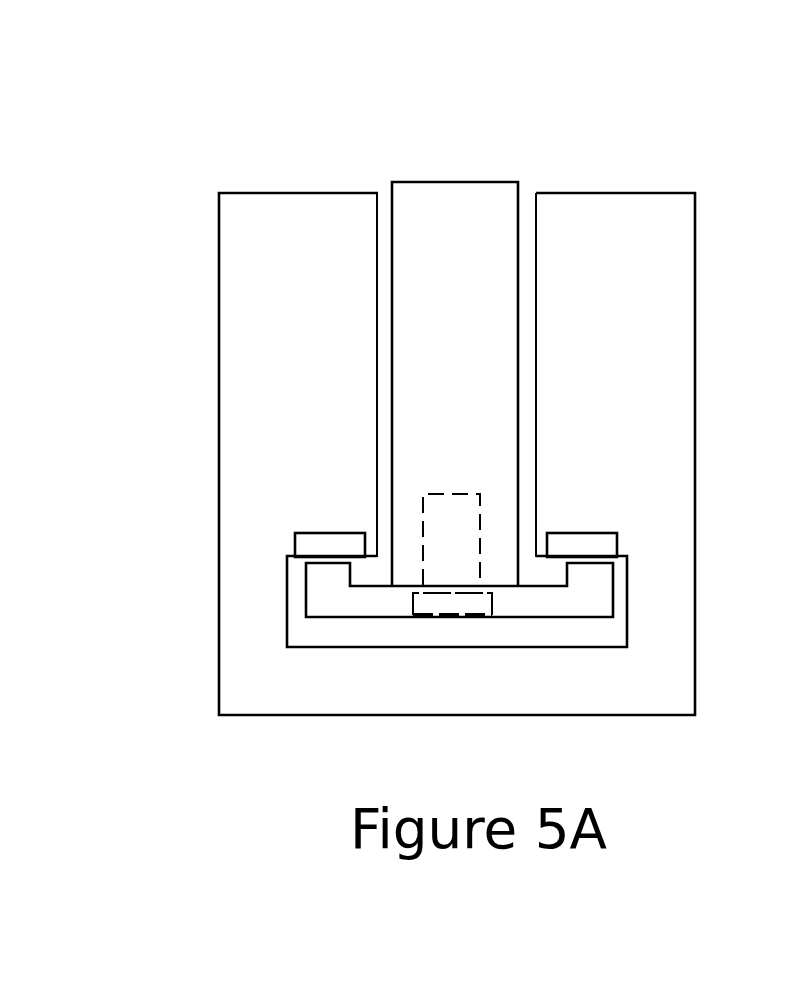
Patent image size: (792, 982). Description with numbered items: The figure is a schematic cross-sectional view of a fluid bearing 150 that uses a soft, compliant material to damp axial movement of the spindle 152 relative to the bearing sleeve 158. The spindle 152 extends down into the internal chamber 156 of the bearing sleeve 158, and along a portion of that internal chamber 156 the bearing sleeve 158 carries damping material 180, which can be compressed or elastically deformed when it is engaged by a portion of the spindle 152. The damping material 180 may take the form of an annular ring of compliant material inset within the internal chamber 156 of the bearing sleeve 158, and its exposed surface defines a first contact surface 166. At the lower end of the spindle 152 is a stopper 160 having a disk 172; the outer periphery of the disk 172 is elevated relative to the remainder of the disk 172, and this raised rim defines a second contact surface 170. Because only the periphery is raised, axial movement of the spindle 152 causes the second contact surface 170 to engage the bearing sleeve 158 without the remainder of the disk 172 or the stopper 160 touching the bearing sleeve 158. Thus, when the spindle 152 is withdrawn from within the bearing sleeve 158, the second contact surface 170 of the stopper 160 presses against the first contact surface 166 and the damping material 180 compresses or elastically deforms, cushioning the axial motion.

The fluid bearing 150 is at (304, 147).
The spindle 152 is at (457, 337).
The internal chamber 156 is at (300, 628).
The bearing sleeve 158 is at (273, 342).
The stopper 160 is at (399, 622).
The first contact surface 166 is at (335, 556).
The second contact surface 170 is at (332, 567).
The disk 172 is at (517, 610).
The damping material 180 is at (312, 541).